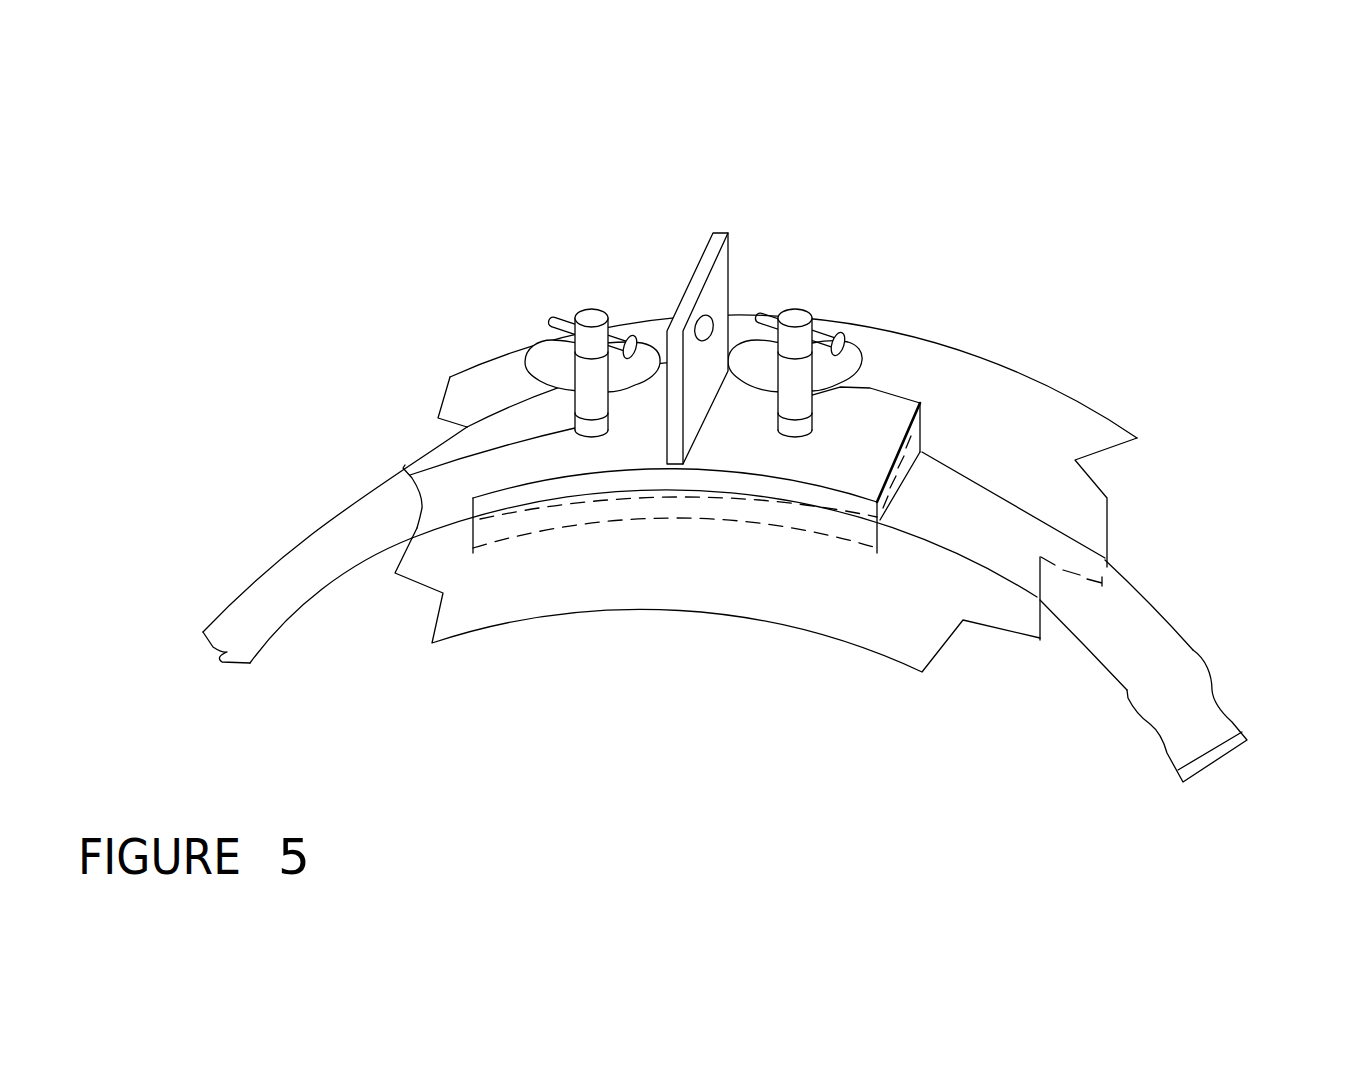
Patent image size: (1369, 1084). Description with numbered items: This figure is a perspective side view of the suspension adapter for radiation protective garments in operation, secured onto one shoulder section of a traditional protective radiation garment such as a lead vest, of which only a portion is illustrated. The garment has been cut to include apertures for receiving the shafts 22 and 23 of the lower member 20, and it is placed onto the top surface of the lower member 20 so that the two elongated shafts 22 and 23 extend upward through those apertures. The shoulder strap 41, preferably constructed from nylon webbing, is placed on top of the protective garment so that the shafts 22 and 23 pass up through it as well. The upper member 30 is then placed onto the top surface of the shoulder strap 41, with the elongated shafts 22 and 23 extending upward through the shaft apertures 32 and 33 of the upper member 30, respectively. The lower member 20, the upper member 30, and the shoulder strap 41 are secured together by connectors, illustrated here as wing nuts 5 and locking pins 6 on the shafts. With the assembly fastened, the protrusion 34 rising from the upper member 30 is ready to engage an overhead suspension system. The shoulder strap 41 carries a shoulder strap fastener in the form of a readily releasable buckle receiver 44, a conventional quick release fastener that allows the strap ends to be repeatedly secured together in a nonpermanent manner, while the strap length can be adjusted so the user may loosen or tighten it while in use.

The wing nut 5 is at (528, 345).
The locking pin 6 is at (573, 325).
The lower member 20 is at (664, 522).
The shaft 22 is at (593, 317).
The shaft 23 is at (793, 318).
The upper member 30 is at (505, 438).
The shaft aperture 32 is at (590, 437).
The shaft aperture 33 is at (800, 437).
The protrusion 34 is at (718, 277).
The shoulder strap 41 is at (297, 567).
The buckle receiver 44 is at (1200, 687).